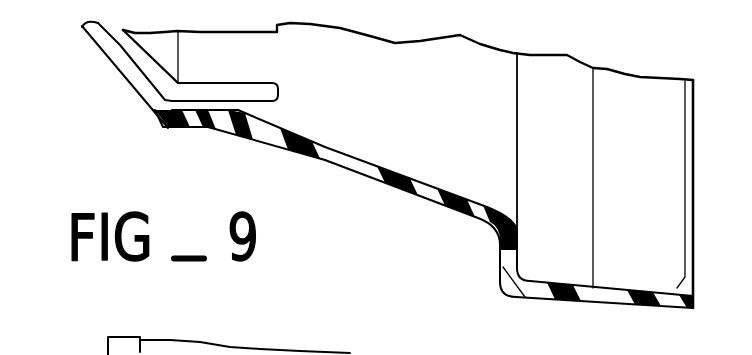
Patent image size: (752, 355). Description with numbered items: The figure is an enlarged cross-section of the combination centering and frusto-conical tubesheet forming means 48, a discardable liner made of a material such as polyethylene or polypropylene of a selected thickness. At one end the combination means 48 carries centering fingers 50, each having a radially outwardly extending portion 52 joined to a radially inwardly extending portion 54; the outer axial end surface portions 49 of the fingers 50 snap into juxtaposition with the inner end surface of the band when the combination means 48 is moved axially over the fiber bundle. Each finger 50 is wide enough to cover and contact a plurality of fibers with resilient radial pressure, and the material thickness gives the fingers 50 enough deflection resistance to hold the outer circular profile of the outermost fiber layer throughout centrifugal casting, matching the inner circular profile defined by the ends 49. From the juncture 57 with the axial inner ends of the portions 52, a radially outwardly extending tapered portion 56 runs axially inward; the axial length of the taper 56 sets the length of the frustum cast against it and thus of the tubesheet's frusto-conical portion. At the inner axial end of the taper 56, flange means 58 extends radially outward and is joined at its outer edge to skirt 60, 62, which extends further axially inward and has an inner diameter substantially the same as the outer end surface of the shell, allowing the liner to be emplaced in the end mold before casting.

The combination centering and frusto-conical tubesheet forming means 48 is at (417, 203).
The outer axial end surface portion 49 is at (82, 26).
The centering finger 50 is at (160, 141).
The radially outwardly extending portion 52 is at (209, 115).
The radially inwardly extending portion 54 is at (129, 84).
The radially outwardly extending tapered portion 56 is at (348, 168).
The juncture 57 is at (250, 113).
The flange means 58 is at (500, 273).
The skirt 60 is at (548, 303).
The skirt 62 is at (633, 310).